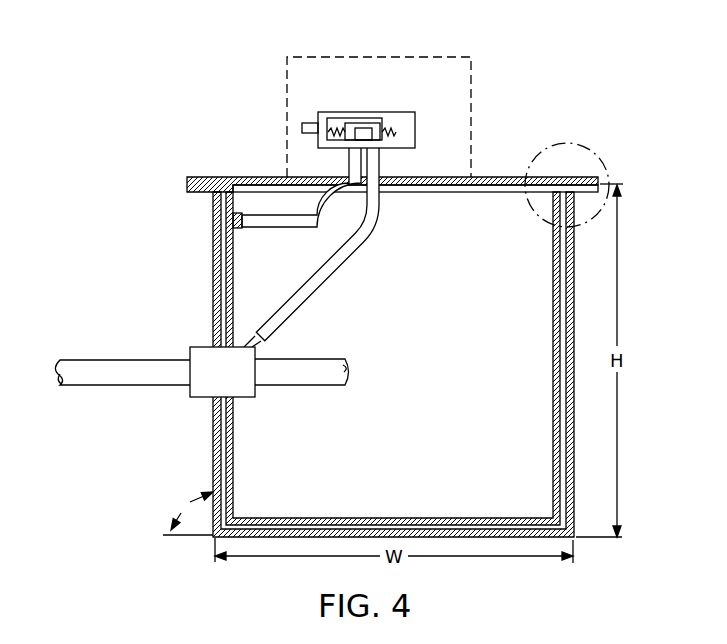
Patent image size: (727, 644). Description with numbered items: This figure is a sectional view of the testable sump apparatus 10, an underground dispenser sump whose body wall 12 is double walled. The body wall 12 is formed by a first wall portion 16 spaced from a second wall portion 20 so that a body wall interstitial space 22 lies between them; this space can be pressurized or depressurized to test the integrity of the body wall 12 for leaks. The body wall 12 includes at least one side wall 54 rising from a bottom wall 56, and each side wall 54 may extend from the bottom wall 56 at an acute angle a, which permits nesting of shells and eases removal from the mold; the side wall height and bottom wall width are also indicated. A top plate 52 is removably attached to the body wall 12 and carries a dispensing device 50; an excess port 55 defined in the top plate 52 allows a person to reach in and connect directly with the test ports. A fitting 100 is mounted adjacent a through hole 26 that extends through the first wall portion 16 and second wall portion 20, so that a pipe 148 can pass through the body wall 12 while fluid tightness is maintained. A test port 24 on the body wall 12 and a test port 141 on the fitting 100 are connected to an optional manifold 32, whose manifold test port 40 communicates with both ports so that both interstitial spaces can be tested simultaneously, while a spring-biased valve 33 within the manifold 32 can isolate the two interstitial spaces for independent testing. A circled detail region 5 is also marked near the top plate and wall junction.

The detail region 5 is at (586, 184).
The testable sump apparatus 10 is at (327, 324).
The body wall 12 is at (343, 364).
The first wall portion 16 is at (366, 364).
The second wall portion 20 is at (393, 358).
The body wall interstitial space 22 is at (194, 360).
The test port 24 is at (297, 184).
The through hole 26 is at (191, 353).
The manifold 32 is at (380, 83).
The valve 33 is at (415, 86).
The manifold test port 40 is at (280, 122).
The dispensing device 50 is at (407, 117).
The top plate 52 is at (392, 161).
The side wall 54 is at (393, 355).
The excess port 55 is at (415, 161).
The bottom wall 56 is at (400, 470).
The fitting 100 is at (122, 416).
The test port 141 is at (308, 243).
The pipe 148 is at (303, 347).
The acute angle a is at (188, 513).